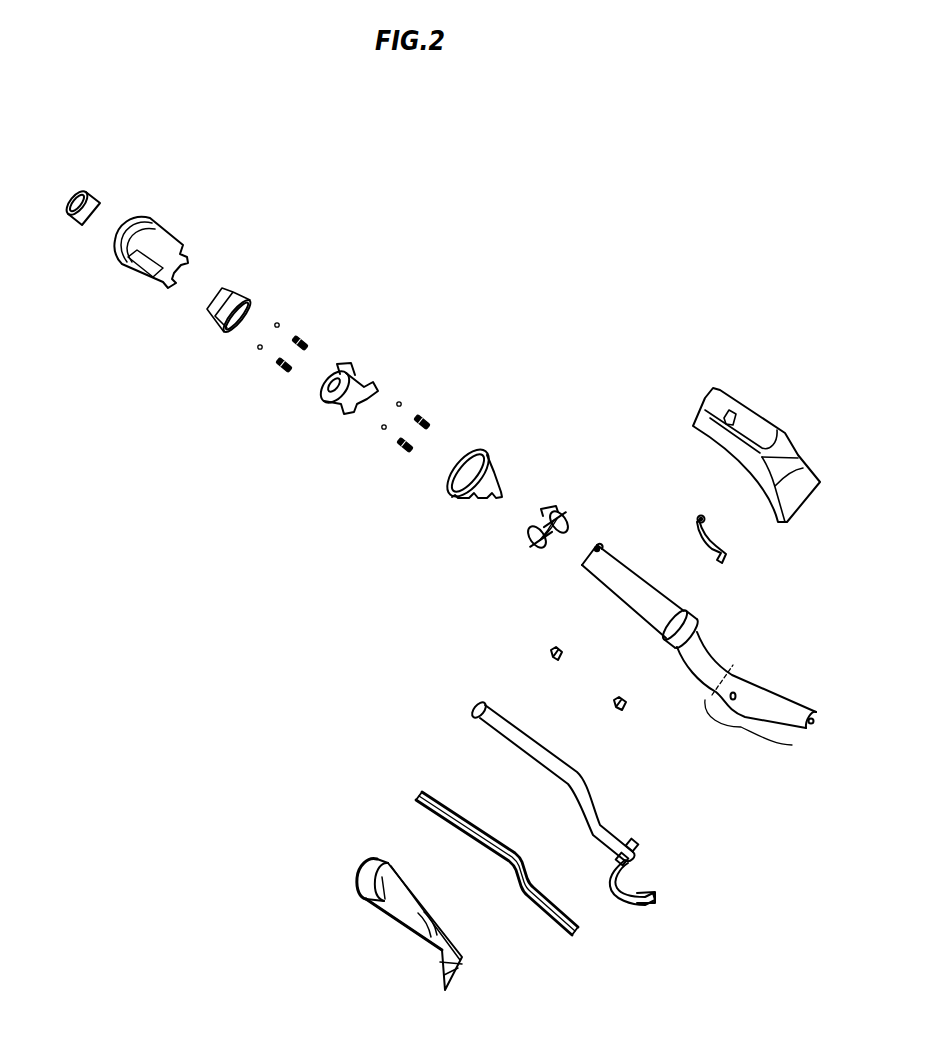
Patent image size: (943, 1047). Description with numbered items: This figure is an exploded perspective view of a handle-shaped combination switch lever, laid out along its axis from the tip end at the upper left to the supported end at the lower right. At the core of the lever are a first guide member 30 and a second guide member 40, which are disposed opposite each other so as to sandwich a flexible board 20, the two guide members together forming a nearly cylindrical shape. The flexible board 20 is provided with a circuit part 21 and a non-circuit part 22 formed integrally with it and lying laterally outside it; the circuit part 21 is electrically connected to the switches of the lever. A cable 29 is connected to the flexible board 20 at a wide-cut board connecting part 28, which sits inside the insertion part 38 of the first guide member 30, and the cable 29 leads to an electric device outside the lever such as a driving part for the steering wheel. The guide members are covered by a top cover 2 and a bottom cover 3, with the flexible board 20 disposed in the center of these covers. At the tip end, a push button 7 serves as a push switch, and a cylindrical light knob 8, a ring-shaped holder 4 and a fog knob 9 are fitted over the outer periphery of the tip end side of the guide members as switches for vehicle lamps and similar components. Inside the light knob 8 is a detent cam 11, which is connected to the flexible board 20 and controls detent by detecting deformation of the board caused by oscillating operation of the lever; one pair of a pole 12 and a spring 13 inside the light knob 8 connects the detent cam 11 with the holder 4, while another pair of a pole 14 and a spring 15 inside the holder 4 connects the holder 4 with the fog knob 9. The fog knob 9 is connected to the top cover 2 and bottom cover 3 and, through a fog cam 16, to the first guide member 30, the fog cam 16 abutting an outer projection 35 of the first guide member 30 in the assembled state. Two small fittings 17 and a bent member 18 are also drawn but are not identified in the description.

The top cover 2 is at (766, 414).
The bottom cover 3 is at (420, 893).
The holder 4 is at (360, 368).
The push button 7 is at (92, 192).
The light knob 8 is at (172, 232).
The fog knob 9 is at (492, 455).
The detent cam 11 is at (236, 288).
The pole 12 is at (281, 322).
The spring 13 is at (306, 338).
The pole 14 is at (402, 401).
The spring 15 is at (430, 414).
The fog cam 16 is at (558, 516).
The clips 17 is at (622, 697).
The hook 18 is at (723, 536).
The flexible board 20 is at (573, 802).
The circuit part 21 is at (542, 750).
The non-circuit part 22 is at (551, 780).
The board connecting part 28 is at (636, 838).
The cable 29 is at (630, 877).
The first guide member 30 is at (699, 650).
The outer projection 35 is at (693, 613).
The insertion part 38 is at (748, 728).
The second guide member 40 is at (497, 847).